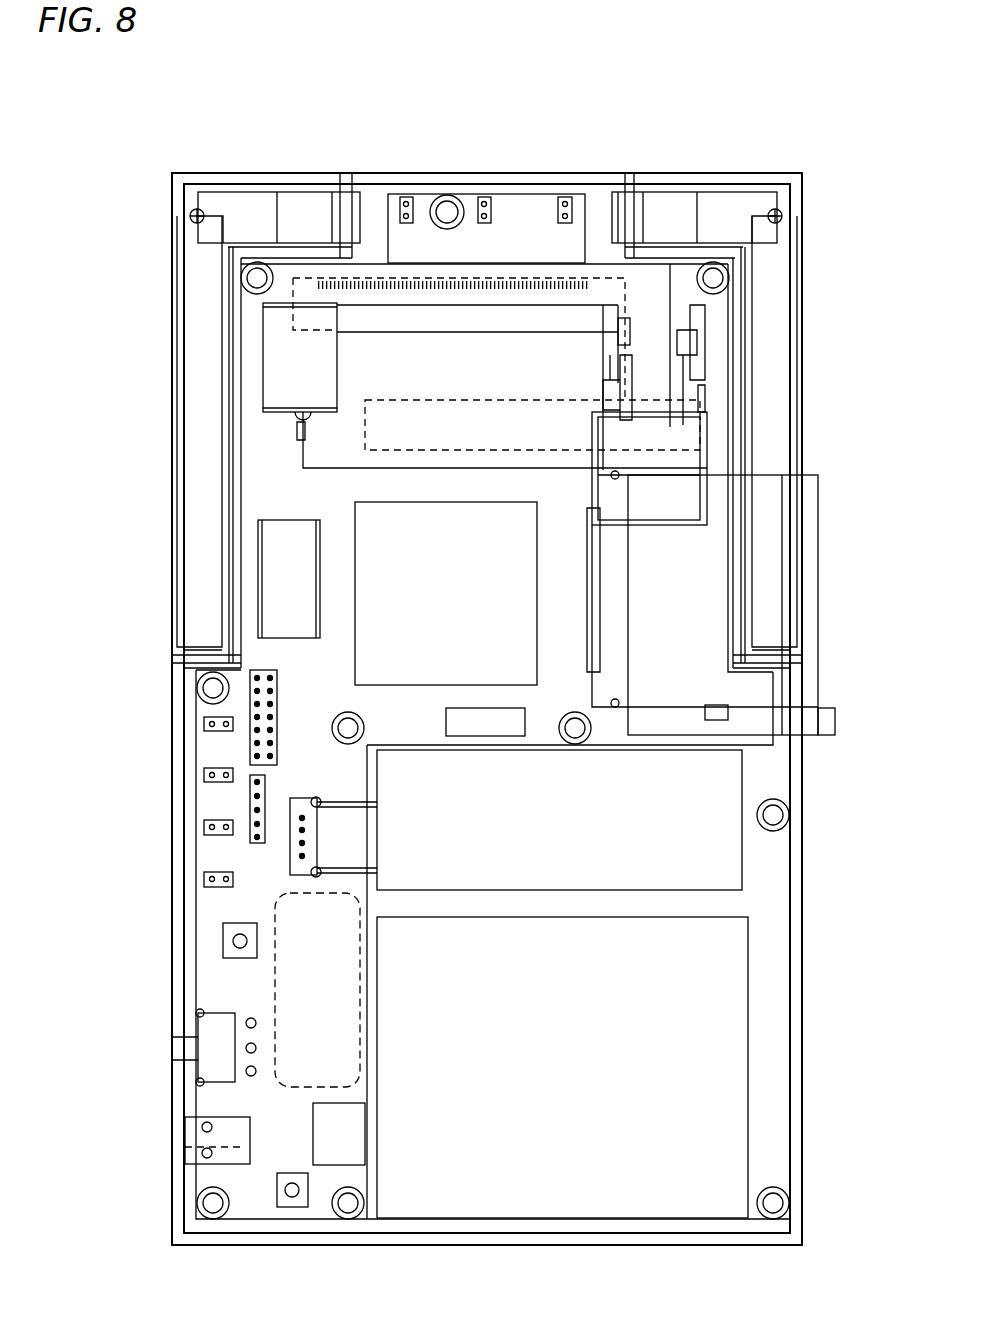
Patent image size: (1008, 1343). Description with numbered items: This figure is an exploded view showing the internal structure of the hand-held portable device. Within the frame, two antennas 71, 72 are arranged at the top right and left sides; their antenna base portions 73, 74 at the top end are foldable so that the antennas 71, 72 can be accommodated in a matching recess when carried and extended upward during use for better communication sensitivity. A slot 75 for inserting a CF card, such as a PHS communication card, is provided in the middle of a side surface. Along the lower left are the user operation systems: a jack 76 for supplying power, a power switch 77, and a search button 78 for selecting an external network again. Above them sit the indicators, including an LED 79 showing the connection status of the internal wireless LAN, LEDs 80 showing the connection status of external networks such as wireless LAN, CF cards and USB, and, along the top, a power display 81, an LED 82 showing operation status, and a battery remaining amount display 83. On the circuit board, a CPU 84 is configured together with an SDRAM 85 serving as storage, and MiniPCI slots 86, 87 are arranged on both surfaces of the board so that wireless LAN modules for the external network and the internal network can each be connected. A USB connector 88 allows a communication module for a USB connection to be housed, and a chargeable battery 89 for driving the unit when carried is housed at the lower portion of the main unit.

The antenna 71 is at (190, 319).
The antenna 72 is at (780, 308).
The antenna base portion 73 is at (190, 195).
The antenna base portion 74 is at (783, 199).
The slot 75 is at (818, 640).
The jack 76 is at (182, 1135).
The power switch 77 is at (192, 1047).
The search button 78 is at (223, 942).
The light emitting diode (LED) 79 is at (204, 880).
The LEDs 80 is at (165, 715).
The power display 81 is at (410, 196).
The LED 82 is at (487, 196).
The battery remaining amount display 83 is at (566, 196).
The CPU 84 is at (355, 513).
The Synchronous Dynamic Random Access Memory (SDRAM) 85 is at (275, 566).
The MiniPCI slot 86 is at (330, 300).
The MiniPCI slot 87 is at (300, 437).
The USB connector 88 is at (723, 863).
The chargeable battery 89 is at (723, 1045).